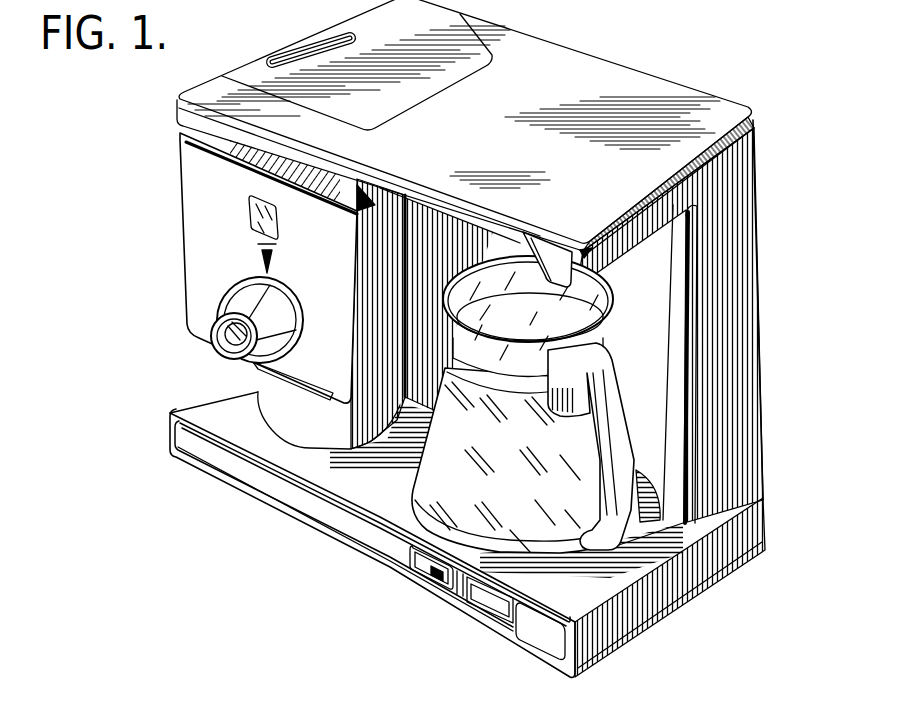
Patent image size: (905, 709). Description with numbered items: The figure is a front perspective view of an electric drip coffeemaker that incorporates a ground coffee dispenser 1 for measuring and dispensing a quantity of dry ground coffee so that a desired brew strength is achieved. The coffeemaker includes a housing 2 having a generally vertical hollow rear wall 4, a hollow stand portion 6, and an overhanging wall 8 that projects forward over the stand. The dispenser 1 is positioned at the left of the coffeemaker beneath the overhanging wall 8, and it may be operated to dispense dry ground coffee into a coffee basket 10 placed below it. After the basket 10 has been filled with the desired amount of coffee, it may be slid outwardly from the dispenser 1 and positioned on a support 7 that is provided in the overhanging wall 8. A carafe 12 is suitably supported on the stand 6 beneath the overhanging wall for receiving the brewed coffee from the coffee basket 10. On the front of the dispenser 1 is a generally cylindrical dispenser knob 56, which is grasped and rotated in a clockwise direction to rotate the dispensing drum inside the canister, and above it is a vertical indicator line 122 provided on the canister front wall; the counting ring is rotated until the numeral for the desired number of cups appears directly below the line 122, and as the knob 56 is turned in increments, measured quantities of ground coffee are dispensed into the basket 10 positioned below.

The dispenser 1 is at (180, 173).
The housing 2 is at (718, 98).
The rear wall 4 is at (748, 254).
The stand portion 6 is at (665, 579).
The support 7 is at (532, 252).
The overhanging wall 8 is at (641, 203).
The coffee basket 10 is at (258, 392).
The carafe 12 is at (433, 510).
The dispenser knob 56 is at (218, 320).
The vertical indicator line 122 is at (263, 258).